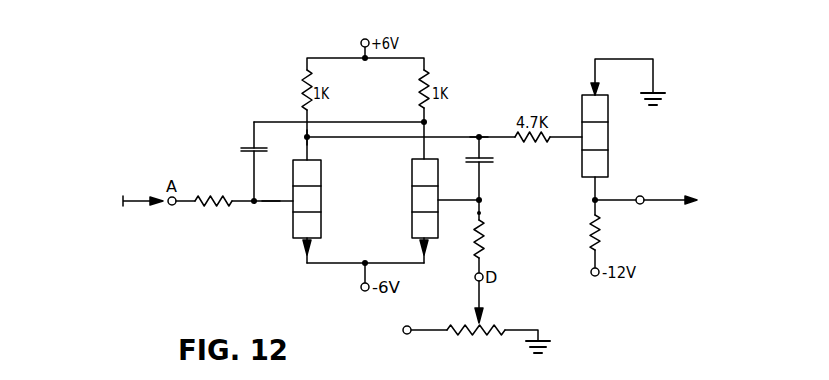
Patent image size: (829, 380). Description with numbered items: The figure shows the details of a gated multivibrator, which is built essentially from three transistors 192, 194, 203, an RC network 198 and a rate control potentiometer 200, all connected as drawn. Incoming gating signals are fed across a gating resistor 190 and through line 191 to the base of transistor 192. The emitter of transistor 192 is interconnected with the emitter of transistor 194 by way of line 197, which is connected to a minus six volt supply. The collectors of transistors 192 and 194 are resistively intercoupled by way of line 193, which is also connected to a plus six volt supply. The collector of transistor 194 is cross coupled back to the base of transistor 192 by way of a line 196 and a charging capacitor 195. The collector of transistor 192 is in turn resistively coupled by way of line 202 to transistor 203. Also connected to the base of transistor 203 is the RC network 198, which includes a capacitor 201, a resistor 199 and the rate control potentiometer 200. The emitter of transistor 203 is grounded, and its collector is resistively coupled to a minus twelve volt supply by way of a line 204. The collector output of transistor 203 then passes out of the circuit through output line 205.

The gating resistor 190 is at (212, 208).
The line 191 is at (271, 206).
The transistor 192 is at (322, 213).
The line 193 is at (305, 127).
The transistor 194 is at (411, 187).
The charging capacitor 195 is at (242, 152).
The line 196 is at (341, 122).
The line 197 is at (405, 262).
The RC network 198 is at (481, 213).
The resistor 199 is at (472, 248).
The rate control potentiometer 200 is at (519, 319).
The capacitor 201 is at (494, 161).
The line 202 is at (488, 127).
The transistor 203 is at (608, 148).
The line 204 is at (594, 212).
The output line 205 is at (612, 197).